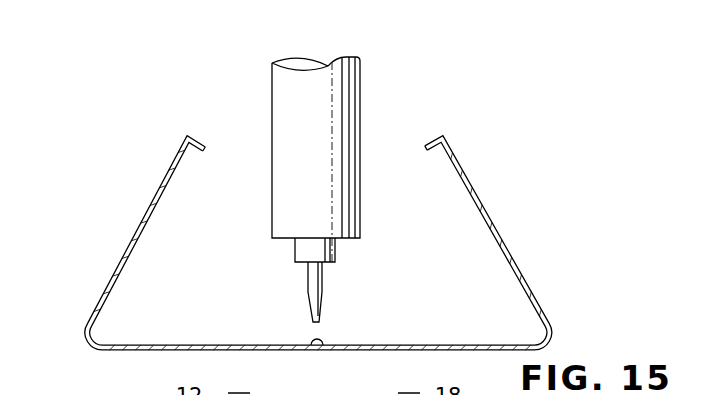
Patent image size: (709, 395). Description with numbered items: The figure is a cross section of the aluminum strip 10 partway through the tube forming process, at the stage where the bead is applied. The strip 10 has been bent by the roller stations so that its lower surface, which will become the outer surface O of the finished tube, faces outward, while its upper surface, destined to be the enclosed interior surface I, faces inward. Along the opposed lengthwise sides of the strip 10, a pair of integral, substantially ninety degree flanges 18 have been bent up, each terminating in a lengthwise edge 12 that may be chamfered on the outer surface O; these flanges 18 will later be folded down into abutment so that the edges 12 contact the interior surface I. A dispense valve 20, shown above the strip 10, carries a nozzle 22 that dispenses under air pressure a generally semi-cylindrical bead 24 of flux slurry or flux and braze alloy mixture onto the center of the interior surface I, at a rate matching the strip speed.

The strip 10 is at (346, 192).
The lengthwise edges 12 is at (207, 150).
The flanges 18 is at (197, 142).
The dispense valve 20 is at (360, 147).
The nozzle 22 is at (323, 278).
The bead 24 is at (312, 342).
The outer surface O is at (490, 212).
The interior surface I is at (492, 343).